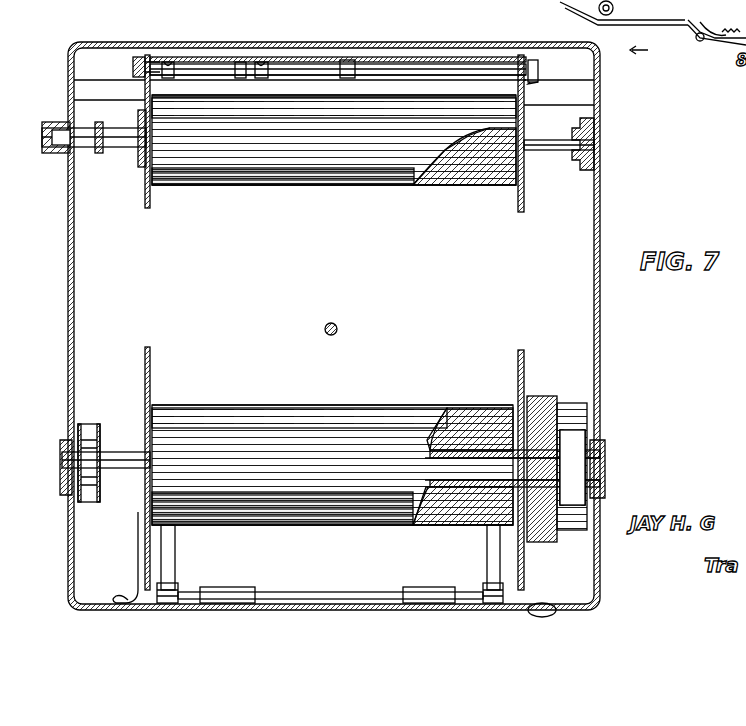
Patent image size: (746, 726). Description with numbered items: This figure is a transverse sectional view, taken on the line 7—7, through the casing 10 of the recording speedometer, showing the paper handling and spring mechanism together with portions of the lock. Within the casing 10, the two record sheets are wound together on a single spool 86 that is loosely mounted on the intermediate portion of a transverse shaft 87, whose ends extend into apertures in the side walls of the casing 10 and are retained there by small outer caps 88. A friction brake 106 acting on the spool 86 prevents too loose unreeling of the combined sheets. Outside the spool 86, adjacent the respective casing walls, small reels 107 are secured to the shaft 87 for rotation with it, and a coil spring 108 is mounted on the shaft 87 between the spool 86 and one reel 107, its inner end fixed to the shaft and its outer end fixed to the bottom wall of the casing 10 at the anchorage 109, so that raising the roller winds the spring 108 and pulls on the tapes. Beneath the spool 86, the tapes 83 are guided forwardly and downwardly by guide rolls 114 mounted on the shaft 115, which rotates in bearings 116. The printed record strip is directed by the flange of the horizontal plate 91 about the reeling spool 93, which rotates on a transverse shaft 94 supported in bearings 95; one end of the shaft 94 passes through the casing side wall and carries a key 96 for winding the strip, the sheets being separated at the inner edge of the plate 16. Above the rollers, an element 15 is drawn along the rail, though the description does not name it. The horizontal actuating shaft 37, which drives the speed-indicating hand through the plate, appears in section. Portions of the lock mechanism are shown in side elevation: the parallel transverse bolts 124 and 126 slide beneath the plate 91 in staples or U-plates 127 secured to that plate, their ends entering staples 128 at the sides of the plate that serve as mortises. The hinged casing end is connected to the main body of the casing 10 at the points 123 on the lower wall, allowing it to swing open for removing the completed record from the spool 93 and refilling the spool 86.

The casing 10 is at (82, 52).
The transverse bolt 126 is at (148, 56).
The plate 16 is at (178, 56).
The guide bar 15 is at (222, 44).
The staples or U-plates 127 is at (362, 62).
The horizontal plate 91 is at (402, 68).
The transverse bolt 124 is at (478, 68).
The staples 128 is at (538, 76).
The key 96 is at (50, 125).
The reeling spool 93 is at (150, 198).
The transverse shaft 94 is at (548, 152).
The bearings 95 is at (585, 160).
The spool 86 is at (150, 366).
The coil spring 108 is at (538, 397).
The reels 107 is at (90, 426).
The outer caps 88 is at (62, 462).
The transverse shaft 87 is at (120, 453).
The actuating shaft 37 is at (344, 330).
The tapes 83 is at (176, 552).
The friction brake 106 is at (135, 574).
The guide rolls 114 is at (180, 590).
The bearings 116 is at (253, 590).
The shaft 115 is at (298, 603).
The spring anchorage 109 is at (565, 586).
The hinge points 123 is at (702, 42).
The section line 7 is at (627, 52).